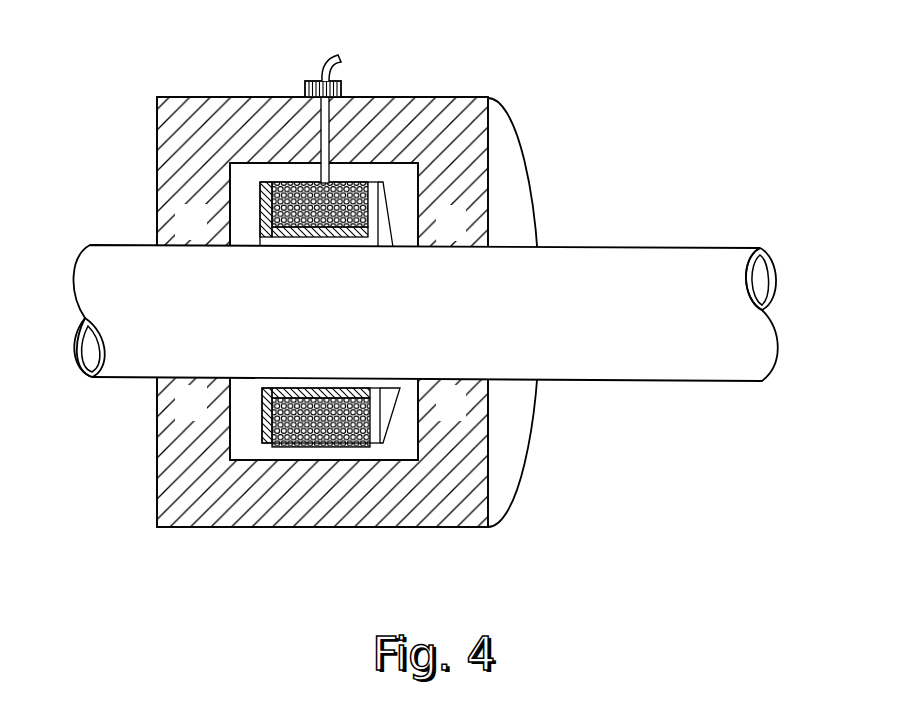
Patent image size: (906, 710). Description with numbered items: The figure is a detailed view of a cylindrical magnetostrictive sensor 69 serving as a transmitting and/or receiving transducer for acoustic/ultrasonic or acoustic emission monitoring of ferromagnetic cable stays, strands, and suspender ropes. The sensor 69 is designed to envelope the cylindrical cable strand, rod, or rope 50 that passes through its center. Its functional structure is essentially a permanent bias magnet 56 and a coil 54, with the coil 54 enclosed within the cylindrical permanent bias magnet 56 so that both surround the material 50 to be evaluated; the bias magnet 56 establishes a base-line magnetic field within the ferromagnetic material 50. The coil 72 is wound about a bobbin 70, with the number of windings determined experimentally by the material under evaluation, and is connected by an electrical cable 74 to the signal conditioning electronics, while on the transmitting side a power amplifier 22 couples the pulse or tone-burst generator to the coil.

The power amplifier 22 is at (346, 57).
The ferromagnetic material 50 is at (594, 330).
The coil 54 is at (353, 240).
The permanent bias magnet 56 is at (157, 163).
The magnetostrictive AE sensor 69 is at (531, 162).
The bobbin 70 is at (298, 392).
The coil 72 is at (343, 452).
The electrical cable 74 is at (320, 60).